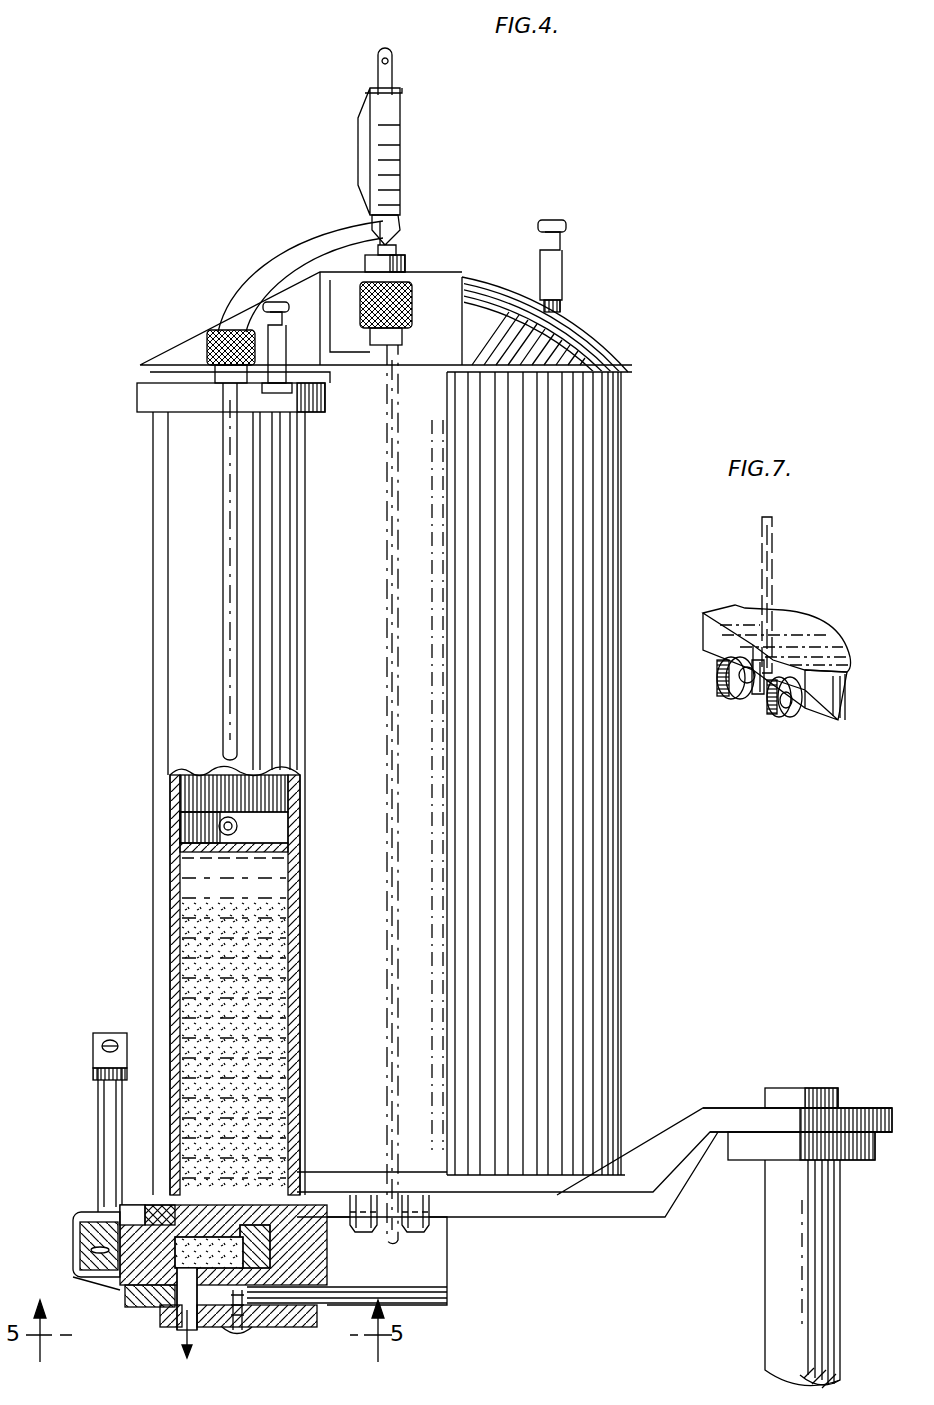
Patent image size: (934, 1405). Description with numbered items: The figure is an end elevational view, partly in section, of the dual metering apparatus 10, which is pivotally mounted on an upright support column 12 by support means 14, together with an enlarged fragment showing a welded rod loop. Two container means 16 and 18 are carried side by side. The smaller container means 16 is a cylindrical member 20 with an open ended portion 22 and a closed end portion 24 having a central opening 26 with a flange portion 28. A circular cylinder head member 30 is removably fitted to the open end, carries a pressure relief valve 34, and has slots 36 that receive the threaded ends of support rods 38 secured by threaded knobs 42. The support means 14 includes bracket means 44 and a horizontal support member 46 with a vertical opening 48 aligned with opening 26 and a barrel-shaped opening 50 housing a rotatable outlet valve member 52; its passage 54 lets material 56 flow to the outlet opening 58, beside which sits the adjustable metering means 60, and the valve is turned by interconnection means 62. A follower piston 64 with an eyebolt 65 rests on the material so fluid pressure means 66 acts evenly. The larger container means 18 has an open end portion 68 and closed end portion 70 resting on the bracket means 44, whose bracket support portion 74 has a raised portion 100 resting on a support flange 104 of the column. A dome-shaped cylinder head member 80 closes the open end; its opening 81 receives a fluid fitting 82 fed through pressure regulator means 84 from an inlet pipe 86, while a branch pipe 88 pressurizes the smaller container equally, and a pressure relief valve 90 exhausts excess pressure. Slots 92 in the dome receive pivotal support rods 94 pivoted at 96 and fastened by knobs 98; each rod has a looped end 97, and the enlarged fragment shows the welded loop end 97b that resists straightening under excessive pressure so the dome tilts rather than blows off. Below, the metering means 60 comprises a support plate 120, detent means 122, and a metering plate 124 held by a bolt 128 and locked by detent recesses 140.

In FIG. 4, the metering apparatus 10 is at (838, 1098).
In FIG. 4, the support column 12 is at (765, 1313).
In FIG. 4, the support means 14 is at (706, 1083).
In FIG. 4, the container means 16 is at (222, 980).
In FIG. 4, the container means 18 is at (575, 773).
In FIG. 4, the cylindrical member 20 is at (155, 638).
In FIG. 4, the open ended portion 22 is at (160, 414).
In FIG. 4, the closed end portion 24 is at (300, 1104).
In FIG. 4, the opening 26 is at (238, 1237).
In FIG. 4, the flange portion 28 is at (252, 1205).
In FIG. 4, the cylinder head member 30 is at (318, 406).
In FIG. 4, the pressure relief valve 34 is at (296, 345).
In FIG. 4, the slots 36 is at (223, 412).
In FIG. 4, the support rods 38 is at (225, 533).
In FIG. 4, the threaded knobs 42 is at (218, 345).
In FIG. 4, the bracket means 44 is at (468, 1232).
In FIG. 4, the support member 46 is at (330, 1256).
In FIG. 4, the vertical opening 48 is at (292, 1208).
In FIG. 4, the barrel-shaped opening 50 is at (248, 1266).
In FIG. 4, the outlet valve member 52 is at (110, 1250).
In FIG. 4, the passage 54 is at (192, 1248).
In FIG. 4, the material 56 is at (234, 1024).
In FIG. 4, the outlet opening 58 is at (172, 1287).
In FIG. 4, the adjustable metering means 60 is at (322, 1322).
In FIG. 4, the interconnection means 62 is at (90, 1158).
In FIG. 4, the follower piston 64 is at (240, 818).
In FIG. 4, the eyebolt 65 is at (200, 826).
In FIG. 4, the fluid pressure means 66 is at (448, 223).
In FIG. 4, the open end portion 68 is at (626, 396).
In FIG. 4, the closed end portion 70 is at (624, 995).
In FIG. 4, the bracket support portion 74 is at (558, 1215).
In FIG. 7, the bracket support portion 74 is at (848, 638).
In FIG. 4, the dome-shaped cylinder head member 80 is at (588, 345).
In FIG. 4, the opening 81 is at (408, 256).
In FIG. 4, the fluid fitting 82 is at (402, 223).
In FIG. 4, the pressure regulator means 84 is at (370, 211).
In FIG. 4, the inlet pipe 86 is at (396, 66).
In FIG. 4, the branch pipe 88 is at (272, 255).
In FIG. 4, the pressure relief valve 90 is at (566, 264).
In FIG. 4, the slots 92 is at (400, 352).
In FIG. 7, the pivotal support rods 94 is at (772, 570).
In FIG. 4, the pivot 96 is at (422, 1200).
In FIG. 7, the pivot 96 is at (778, 716).
In FIG. 7, the looped end 97 is at (733, 698).
In FIG. 7, the welded loop end 97b is at (770, 650).
In FIG. 4, the knobs 98 is at (412, 316).
In FIG. 4, the raised portion 100 is at (737, 1105).
In FIG. 4, the support flange 104 is at (737, 1150).
In FIG. 4, the support plate 120 is at (132, 1292).
In FIG. 4, the detent means 122 is at (170, 1300).
In FIG. 4, the metering plate 124 is at (318, 1315).
In FIG. 4, the bolt 128 is at (240, 1330).
In FIG. 4, the detent recesses 140 is at (236, 1322).